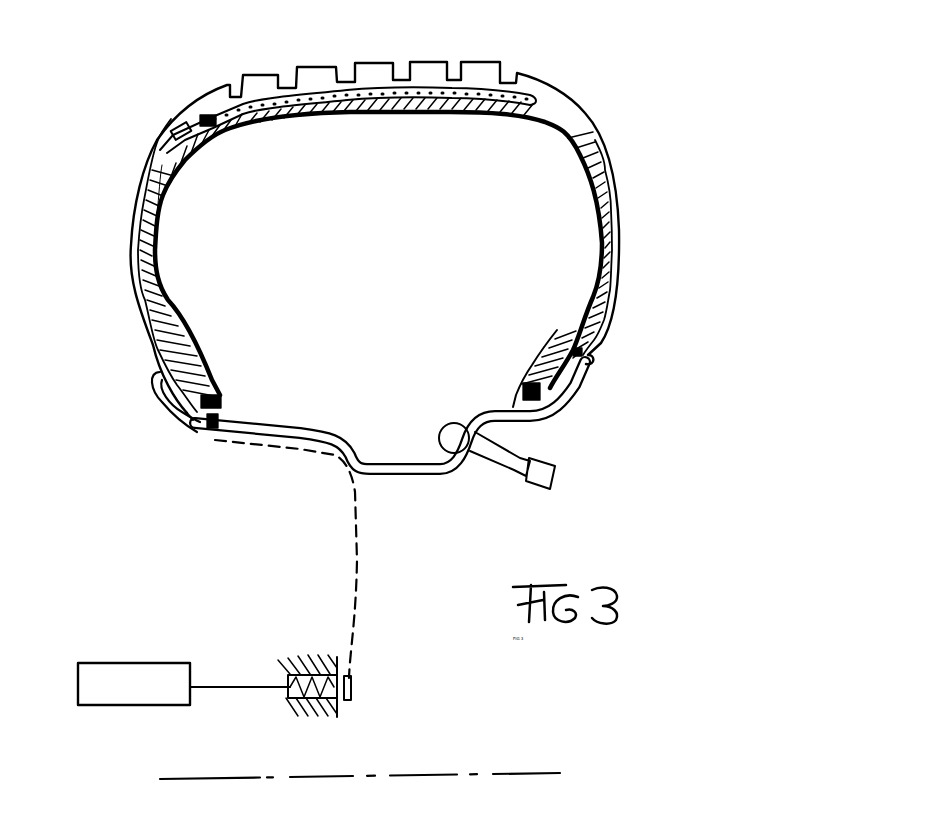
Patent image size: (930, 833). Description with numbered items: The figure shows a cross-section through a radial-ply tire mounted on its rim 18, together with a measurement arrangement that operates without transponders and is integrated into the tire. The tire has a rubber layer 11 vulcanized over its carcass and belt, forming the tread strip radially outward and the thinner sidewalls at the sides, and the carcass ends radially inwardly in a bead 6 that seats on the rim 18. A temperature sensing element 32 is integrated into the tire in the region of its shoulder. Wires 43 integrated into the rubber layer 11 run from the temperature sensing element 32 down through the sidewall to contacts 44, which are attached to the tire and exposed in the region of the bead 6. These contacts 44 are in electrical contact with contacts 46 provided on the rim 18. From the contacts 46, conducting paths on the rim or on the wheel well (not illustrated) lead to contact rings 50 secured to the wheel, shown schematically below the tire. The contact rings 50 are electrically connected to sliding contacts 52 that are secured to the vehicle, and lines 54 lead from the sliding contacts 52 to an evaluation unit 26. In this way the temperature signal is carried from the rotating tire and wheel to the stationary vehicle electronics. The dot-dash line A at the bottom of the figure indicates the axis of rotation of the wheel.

The rubber layer 11 is at (578, 84).
The temperature sensing element 32 is at (183, 125).
The wires 43 is at (152, 156).
The bead 6 is at (157, 379).
The contacts 44 is at (190, 424).
The contacts 46 is at (206, 430).
The rim 18 is at (306, 438).
The evaluation unit 26 is at (128, 694).
The lines 54 is at (250, 687).
The sliding contacts 52 is at (336, 673).
The contact rings 50 is at (355, 685).
The axis of rotation A is at (510, 773).